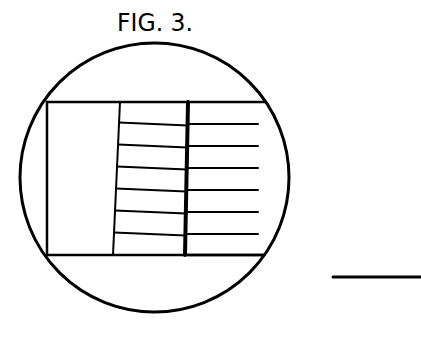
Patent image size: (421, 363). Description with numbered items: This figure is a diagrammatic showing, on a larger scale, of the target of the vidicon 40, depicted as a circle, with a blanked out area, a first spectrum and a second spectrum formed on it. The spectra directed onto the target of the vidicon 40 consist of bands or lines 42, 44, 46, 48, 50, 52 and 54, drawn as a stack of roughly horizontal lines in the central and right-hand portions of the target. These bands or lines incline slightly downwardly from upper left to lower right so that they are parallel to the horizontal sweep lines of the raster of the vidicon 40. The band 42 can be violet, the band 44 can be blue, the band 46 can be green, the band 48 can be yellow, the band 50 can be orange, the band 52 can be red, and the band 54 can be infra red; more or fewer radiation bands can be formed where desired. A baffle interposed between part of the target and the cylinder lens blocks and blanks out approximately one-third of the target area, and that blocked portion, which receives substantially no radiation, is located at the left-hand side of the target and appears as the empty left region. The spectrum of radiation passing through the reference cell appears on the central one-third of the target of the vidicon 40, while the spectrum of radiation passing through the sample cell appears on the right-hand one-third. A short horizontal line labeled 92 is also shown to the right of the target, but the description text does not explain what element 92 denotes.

The vidicon 40 is at (70, 285).
The band 42 is at (248, 113).
The band 44 is at (250, 140).
The band 46 is at (248, 163).
The band 48 is at (250, 185).
The band 50 is at (247, 212).
The band 52 is at (247, 228).
The band 54 is at (262, 253).
The reference line 92 is at (376, 273).